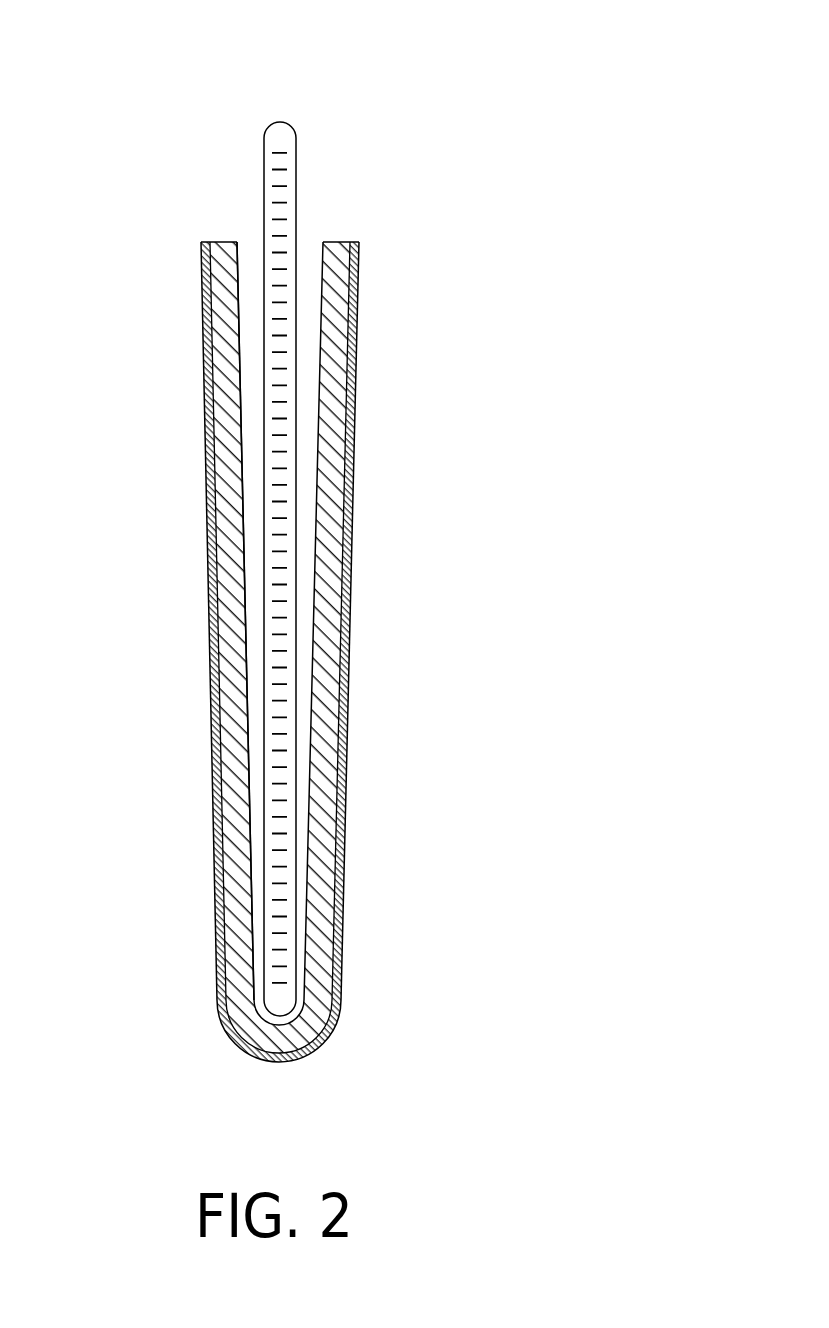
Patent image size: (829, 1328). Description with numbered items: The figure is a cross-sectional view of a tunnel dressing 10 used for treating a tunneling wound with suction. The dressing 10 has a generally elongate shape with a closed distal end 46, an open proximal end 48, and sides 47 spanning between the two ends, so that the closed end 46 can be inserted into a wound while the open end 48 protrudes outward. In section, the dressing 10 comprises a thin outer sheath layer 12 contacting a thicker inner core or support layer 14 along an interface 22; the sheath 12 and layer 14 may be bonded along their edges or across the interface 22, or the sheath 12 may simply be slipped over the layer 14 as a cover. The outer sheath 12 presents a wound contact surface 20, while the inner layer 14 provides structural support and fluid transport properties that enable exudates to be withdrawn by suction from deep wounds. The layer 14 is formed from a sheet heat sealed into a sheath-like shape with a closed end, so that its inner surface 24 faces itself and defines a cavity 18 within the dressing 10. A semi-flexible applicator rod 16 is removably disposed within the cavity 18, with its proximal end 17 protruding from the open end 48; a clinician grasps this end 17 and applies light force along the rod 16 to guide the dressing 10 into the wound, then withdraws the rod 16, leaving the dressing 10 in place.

The tunnel dressing 10 is at (458, 432).
The outer sheath layer 12 is at (357, 242).
The inner support layer 14 is at (340, 242).
The applicator rod 16 is at (283, 173).
The proximal end of applicator rod 17 is at (280, 137).
The cavity 18 is at (250, 245).
The wound contact surface 20 is at (345, 716).
The interface 22 is at (340, 628).
The inner surface 24 is at (322, 551).
The closed distal end 46 is at (343, 1062).
The sides 47 is at (196, 739).
The open proximal end 48 is at (202, 223).